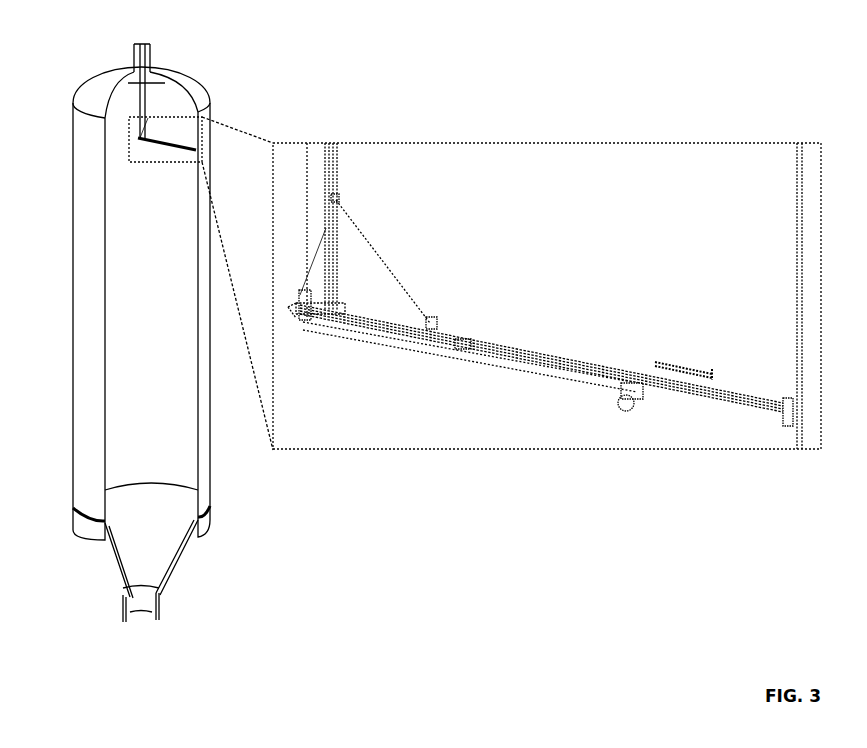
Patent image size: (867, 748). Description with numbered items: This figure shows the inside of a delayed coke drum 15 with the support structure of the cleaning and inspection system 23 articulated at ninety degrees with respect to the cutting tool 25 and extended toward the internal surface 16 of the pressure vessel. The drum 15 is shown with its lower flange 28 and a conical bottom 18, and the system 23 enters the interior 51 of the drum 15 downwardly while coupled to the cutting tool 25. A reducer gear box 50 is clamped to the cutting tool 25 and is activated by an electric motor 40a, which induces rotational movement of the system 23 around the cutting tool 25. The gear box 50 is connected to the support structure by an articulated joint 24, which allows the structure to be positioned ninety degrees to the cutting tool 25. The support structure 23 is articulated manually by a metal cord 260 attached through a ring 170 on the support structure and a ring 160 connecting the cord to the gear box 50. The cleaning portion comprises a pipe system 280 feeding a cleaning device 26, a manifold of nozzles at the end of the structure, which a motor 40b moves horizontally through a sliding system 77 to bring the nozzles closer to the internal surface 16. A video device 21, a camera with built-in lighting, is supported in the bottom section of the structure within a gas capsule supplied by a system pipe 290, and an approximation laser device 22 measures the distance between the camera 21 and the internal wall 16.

The delayed coke drum 15 is at (96, 68).
The internal surface 16 is at (198, 325).
The conical bottom 18 is at (97, 548).
The video device 21 is at (645, 397).
The approximation laser device 22 is at (636, 406).
The cleaning and inspection system 23 is at (457, 340).
The articulated joint 24 is at (345, 305).
The cutting tool 25 is at (146, 105).
The cleaning device 26 is at (785, 414).
The lower flange 28 is at (157, 600).
The electric motor 40a is at (301, 289).
The motor 40b is at (475, 355).
The reducer gear box 50 is at (288, 318).
The interior 51 is at (475, 283).
The sliding system 77 is at (700, 378).
The ring 160 is at (337, 198).
The ring 170 is at (433, 322).
The metal cord 260 is at (390, 258).
The pipe system 280 is at (331, 181).
The system pipe 290 is at (332, 163).